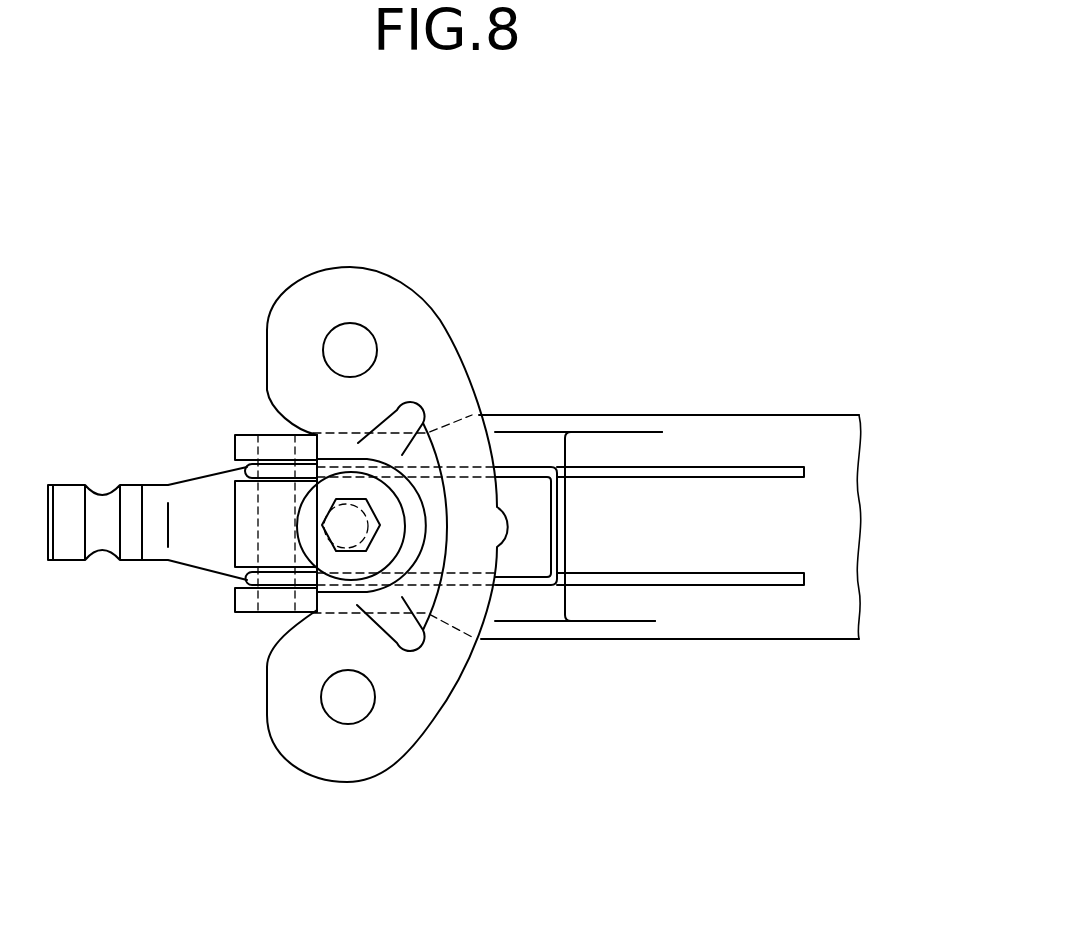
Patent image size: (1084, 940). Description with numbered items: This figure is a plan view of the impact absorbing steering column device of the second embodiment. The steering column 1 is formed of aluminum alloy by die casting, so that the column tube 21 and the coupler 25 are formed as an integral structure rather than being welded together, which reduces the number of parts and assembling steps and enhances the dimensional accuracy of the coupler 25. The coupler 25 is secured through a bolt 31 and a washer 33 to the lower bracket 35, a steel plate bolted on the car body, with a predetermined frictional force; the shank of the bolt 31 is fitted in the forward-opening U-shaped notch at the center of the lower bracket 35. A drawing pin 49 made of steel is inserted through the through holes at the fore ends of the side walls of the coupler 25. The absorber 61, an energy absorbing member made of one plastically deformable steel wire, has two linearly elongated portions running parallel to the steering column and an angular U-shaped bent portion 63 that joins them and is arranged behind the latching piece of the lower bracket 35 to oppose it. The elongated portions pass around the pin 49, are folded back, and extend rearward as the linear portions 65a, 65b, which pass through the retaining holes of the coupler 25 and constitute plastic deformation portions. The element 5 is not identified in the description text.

The steering column 1 is at (782, 308).
The pipe fitting 5 is at (72, 548).
The column tube 21 is at (685, 625).
The coupler 25 is at (250, 600).
The bolt 31 is at (333, 526).
The washer 33 is at (347, 487).
The lower bracket 35 is at (470, 318).
The drawing pin 49 is at (257, 533).
The absorber 61 is at (603, 458).
The angular U-shaped bent portion 63 is at (558, 523).
The linear portion 65a is at (767, 471).
The linear portion 65b is at (765, 576).